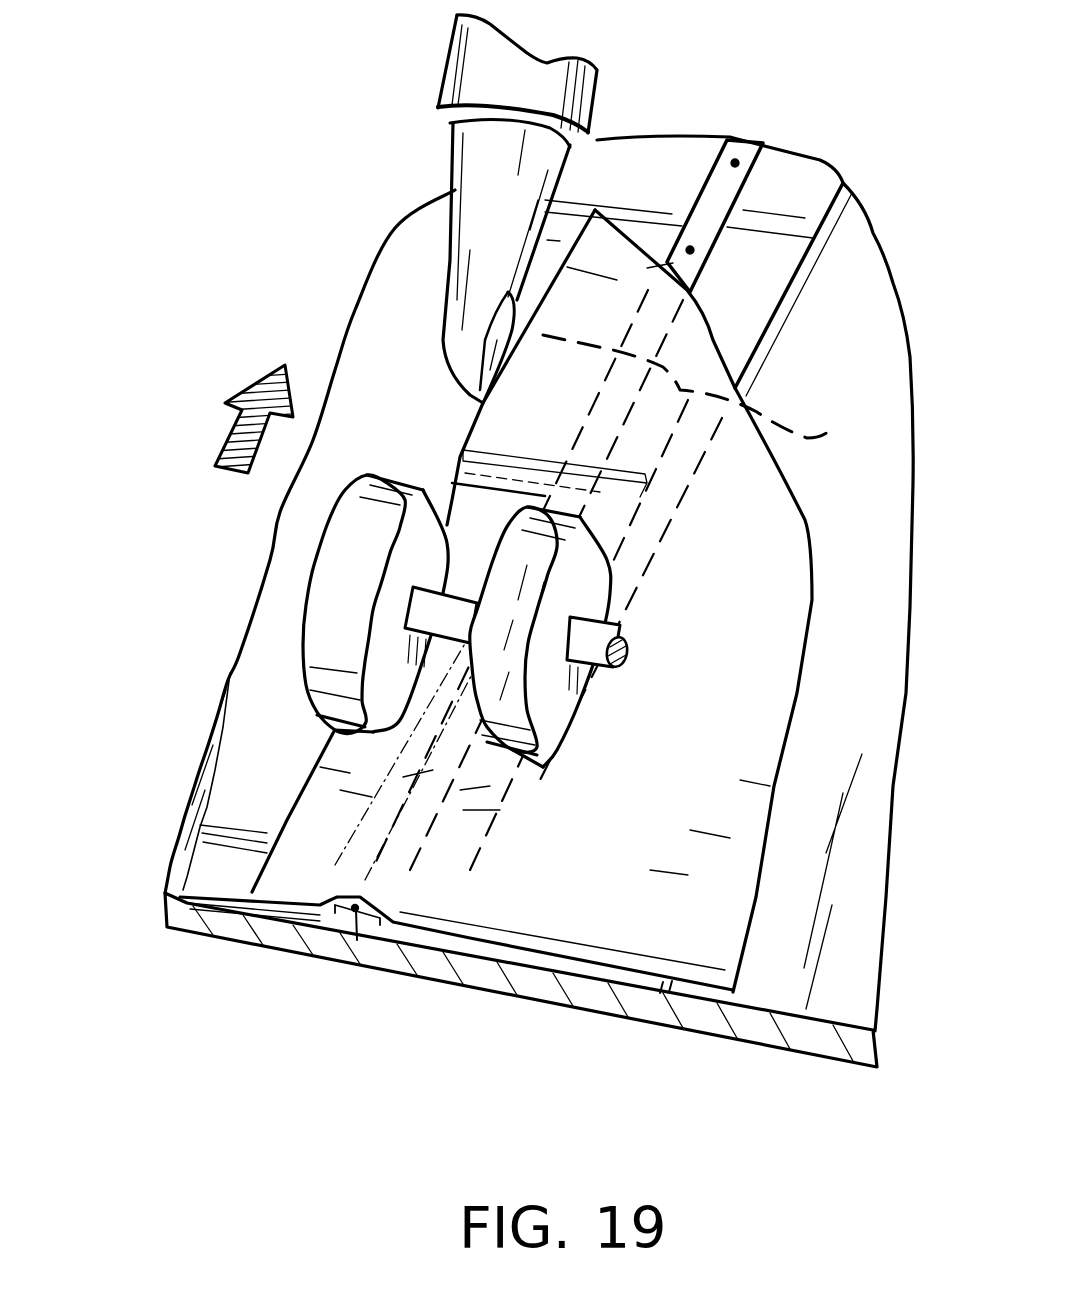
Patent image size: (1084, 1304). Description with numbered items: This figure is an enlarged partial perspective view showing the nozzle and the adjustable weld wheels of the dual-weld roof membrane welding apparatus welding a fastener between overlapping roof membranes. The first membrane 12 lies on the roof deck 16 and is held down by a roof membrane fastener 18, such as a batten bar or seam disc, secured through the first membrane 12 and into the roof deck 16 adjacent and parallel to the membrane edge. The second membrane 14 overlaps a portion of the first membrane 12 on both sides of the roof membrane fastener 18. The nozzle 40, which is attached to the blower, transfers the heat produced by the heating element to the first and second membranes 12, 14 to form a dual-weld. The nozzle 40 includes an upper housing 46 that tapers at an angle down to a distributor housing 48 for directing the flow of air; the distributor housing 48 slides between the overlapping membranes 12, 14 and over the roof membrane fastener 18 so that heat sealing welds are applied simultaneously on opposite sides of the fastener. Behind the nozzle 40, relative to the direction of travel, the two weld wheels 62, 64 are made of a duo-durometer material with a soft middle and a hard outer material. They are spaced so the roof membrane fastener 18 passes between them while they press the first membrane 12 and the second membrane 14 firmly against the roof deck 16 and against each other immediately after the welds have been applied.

The first membrane 12 is at (223, 875).
The second membrane 14 is at (592, 917).
The roof deck 16 is at (293, 940).
The roof membrane fastener 18 is at (380, 925).
The nozzle 40 is at (441, 209).
The upper housing 46 is at (462, 266).
The distributor housing 48 is at (800, 432).
The weld wheel 62 is at (323, 612).
The weld wheel 64 is at (510, 680).